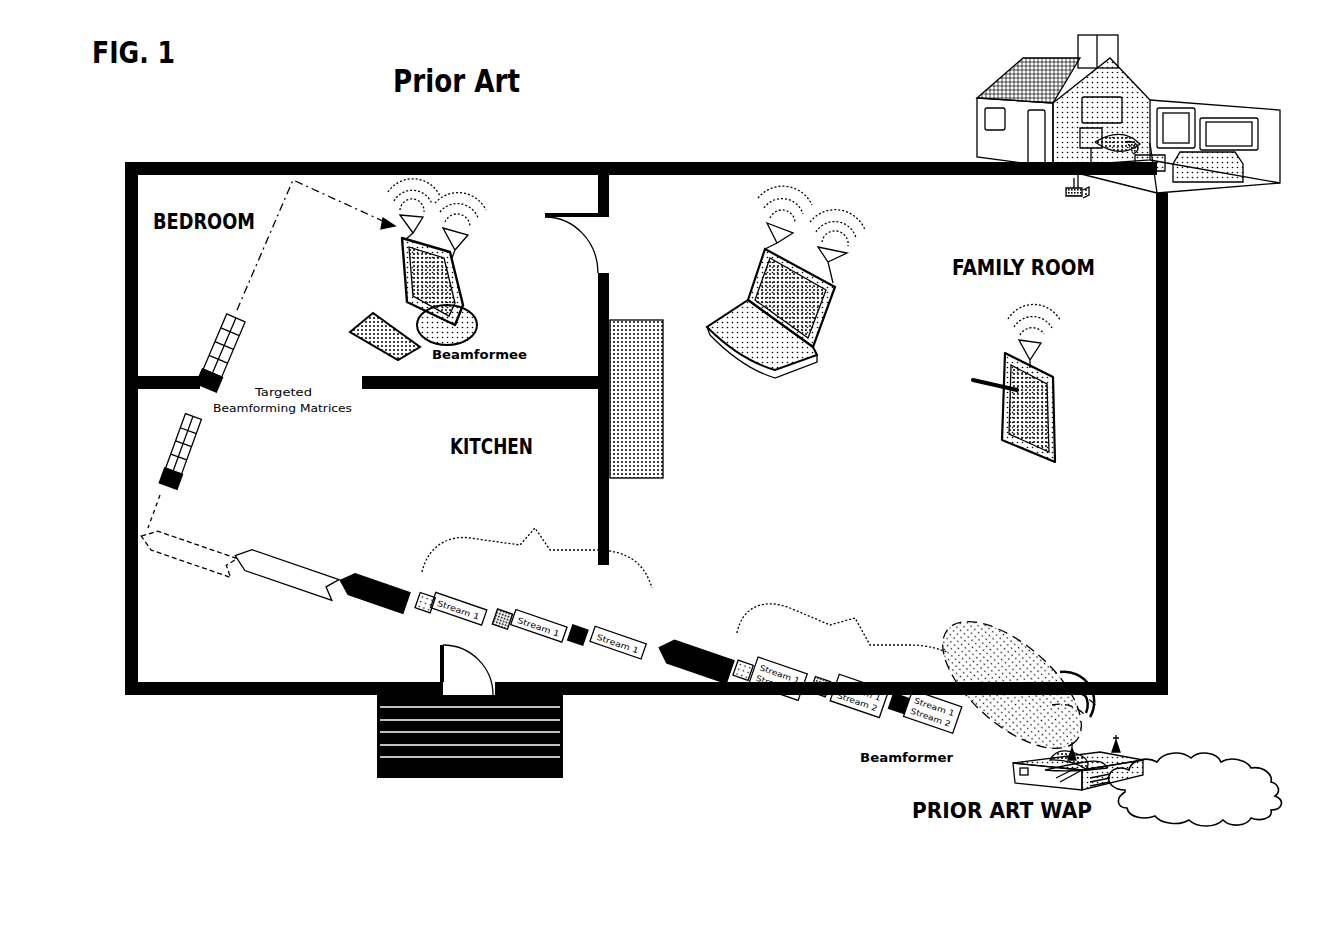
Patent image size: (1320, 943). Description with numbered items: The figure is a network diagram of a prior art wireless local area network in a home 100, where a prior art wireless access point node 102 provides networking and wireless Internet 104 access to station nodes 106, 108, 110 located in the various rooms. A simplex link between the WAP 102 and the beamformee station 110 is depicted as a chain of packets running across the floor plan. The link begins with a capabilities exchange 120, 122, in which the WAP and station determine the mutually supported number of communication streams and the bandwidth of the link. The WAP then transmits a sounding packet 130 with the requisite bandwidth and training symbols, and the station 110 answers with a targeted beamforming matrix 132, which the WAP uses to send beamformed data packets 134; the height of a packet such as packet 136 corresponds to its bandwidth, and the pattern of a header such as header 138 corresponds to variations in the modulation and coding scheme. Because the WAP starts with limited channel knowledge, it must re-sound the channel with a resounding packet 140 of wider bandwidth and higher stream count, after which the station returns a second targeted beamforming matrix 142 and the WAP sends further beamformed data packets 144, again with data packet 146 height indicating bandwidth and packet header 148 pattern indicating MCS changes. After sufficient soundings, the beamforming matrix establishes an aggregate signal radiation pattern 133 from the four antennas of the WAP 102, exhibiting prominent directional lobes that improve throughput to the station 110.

The home 100 is at (913, 160).
The prior art wireless access point (WAP) node 102 is at (1070, 195).
The wireless Internet 104 is at (1195, 766).
The station node 106 is at (1016, 450).
The station node 108 is at (768, 374).
The station 110 is at (418, 269).
The capabilities exchange 120 is at (283, 586).
The capabilities exchange 122 is at (185, 565).
The sounding packet 130 is at (378, 570).
The targeted beamforming matrix 132 is at (198, 424).
The aggregate signal radiation pattern 133 is at (1002, 653).
The beamformed data packets 134 is at (537, 558).
The packet 136 is at (425, 612).
The packet header 138 is at (519, 638).
The resounding packet 140 is at (698, 640).
The second targeted beamforming matrix 142 is at (239, 324).
The beamformed data packets 144 is at (842, 628).
The data packet 146 is at (756, 685).
The packet header 148 is at (844, 709).